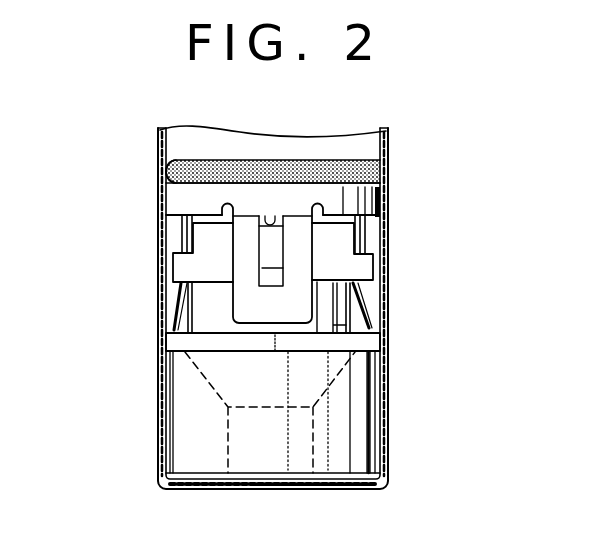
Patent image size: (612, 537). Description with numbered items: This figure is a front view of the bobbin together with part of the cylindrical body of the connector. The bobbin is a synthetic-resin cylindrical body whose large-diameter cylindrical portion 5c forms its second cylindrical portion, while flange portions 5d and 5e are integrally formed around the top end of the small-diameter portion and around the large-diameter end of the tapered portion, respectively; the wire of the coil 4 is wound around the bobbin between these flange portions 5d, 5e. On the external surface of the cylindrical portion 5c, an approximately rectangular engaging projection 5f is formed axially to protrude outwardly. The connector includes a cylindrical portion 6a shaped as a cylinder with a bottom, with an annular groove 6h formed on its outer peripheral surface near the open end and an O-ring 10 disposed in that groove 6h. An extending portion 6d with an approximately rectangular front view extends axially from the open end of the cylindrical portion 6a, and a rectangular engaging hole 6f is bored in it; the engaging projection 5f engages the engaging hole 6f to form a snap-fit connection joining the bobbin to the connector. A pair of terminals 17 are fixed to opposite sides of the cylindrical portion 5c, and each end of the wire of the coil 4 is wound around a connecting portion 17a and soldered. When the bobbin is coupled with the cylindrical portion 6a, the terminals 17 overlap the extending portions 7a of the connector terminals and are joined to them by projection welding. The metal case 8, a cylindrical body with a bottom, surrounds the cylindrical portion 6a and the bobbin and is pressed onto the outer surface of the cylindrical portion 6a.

The coil 4 is at (330, 417).
The large-diameter cylindrical portion 5c is at (373, 329).
The flange portion 5d is at (168, 479).
The flange portion 5e is at (180, 347).
The engaging projection 5f is at (272, 268).
The cylindrical portion 6a is at (185, 202).
The extending portion 6d is at (243, 295).
The engaging hole 6f is at (277, 216).
The annular groove 6h is at (166, 169).
The extending portion 7a is at (180, 218).
The case 8 is at (165, 412).
The O-ring 10 is at (388, 172).
The terminal 17 is at (182, 251).
The connecting portion 17a is at (182, 306).